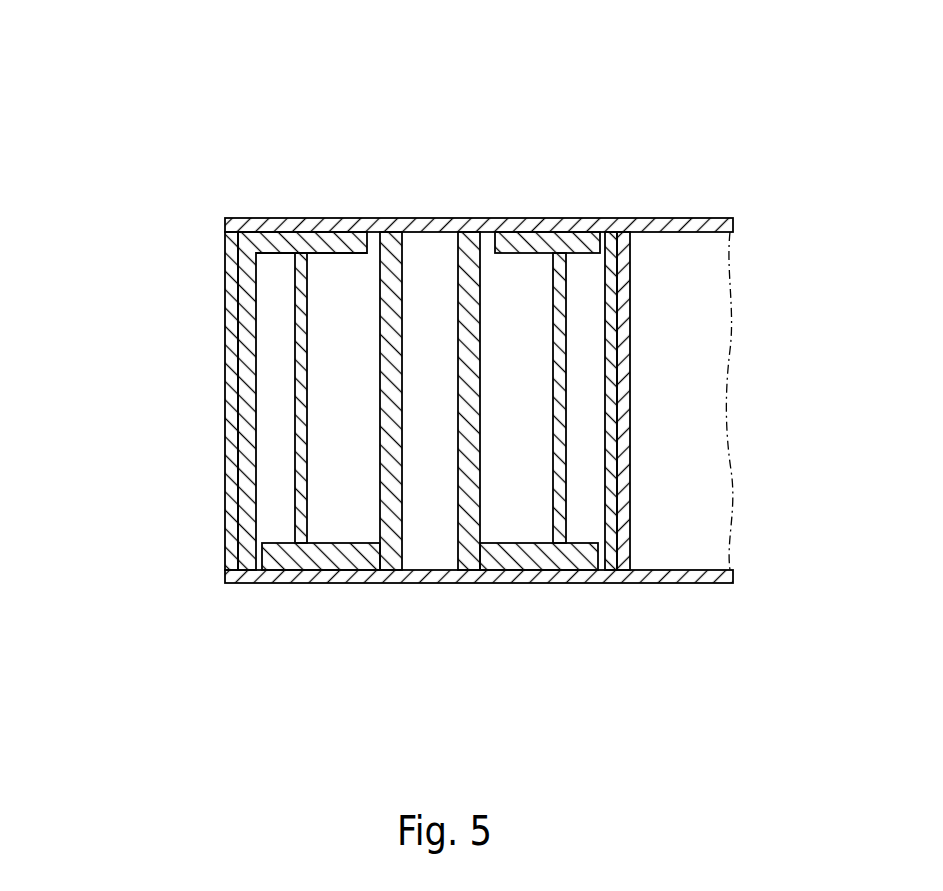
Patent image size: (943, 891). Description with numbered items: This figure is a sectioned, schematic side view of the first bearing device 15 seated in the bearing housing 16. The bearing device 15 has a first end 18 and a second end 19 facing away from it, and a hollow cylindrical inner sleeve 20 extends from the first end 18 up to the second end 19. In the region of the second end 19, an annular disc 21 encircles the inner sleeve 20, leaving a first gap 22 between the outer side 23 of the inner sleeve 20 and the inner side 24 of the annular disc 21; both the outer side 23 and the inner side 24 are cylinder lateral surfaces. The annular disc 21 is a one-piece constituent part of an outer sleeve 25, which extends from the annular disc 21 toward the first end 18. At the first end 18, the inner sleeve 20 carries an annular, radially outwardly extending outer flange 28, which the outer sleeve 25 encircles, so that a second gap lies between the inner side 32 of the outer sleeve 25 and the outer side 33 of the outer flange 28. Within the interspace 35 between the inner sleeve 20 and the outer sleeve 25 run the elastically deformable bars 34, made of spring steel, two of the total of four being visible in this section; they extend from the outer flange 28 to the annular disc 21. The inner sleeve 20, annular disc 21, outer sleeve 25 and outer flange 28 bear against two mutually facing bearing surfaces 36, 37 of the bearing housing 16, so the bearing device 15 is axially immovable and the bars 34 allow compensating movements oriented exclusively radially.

The bearing device 15 is at (435, 333).
The bearing housing 16 is at (435, 345).
The first end 18 is at (208, 580).
The second end 19 is at (202, 221).
The inner sleeve 20 is at (403, 262).
The annular disc 21 is at (300, 240).
The first gap 22 is at (368, 224).
The outer side 23 is at (485, 301).
The inner side 24 is at (486, 243).
The outer sleeve 25 is at (612, 402).
The outer flange 28 is at (360, 555).
The inner side 32 is at (277, 524).
The outer side 33 is at (262, 558).
The elastically deformable bars 34 is at (300, 397).
The interspace 35 is at (266, 340).
The bearing surface 36 is at (255, 250).
The bearing surface 37 is at (513, 556).